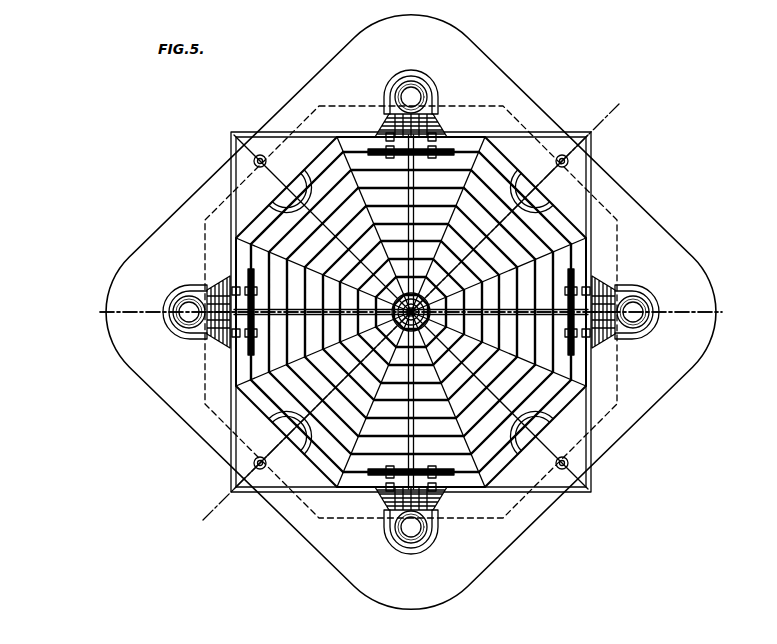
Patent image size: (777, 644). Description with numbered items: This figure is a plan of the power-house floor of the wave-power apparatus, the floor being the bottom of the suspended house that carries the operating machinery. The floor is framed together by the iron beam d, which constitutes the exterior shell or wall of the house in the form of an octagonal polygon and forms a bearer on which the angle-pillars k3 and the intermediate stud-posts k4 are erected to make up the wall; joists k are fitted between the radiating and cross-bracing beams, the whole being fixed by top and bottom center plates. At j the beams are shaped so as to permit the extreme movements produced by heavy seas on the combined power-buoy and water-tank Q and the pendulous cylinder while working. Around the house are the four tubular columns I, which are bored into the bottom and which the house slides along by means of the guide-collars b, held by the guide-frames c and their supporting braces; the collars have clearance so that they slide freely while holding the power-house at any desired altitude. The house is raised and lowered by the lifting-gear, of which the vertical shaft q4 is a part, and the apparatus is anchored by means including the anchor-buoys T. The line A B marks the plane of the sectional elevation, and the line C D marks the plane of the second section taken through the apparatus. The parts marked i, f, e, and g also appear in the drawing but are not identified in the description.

The section line A B A is at (404, 304).
The section line A B is at (415, 310).
The section line C D C is at (292, 100).
The section line C D is at (412, 306).
The iron beam d is at (330, 134).
The joists k is at (345, 136).
The angle-pillars k3 is at (488, 100).
The stud-posts k4 is at (450, 138).
The radial arms i is at (352, 275).
The cross arms f is at (366, 160).
The diagonal arms e is at (406, 168).
The shaped beam portion j is at (252, 459).
The combined power-buoy and water-tank Q is at (262, 156).
The guide-collars b is at (393, 89).
The tubular columns I is at (417, 84).
The vertical shaft q4 is at (392, 107).
The anchor-buoys T is at (439, 91).
The guide-frames c is at (398, 120).
The cross bar g is at (442, 150).